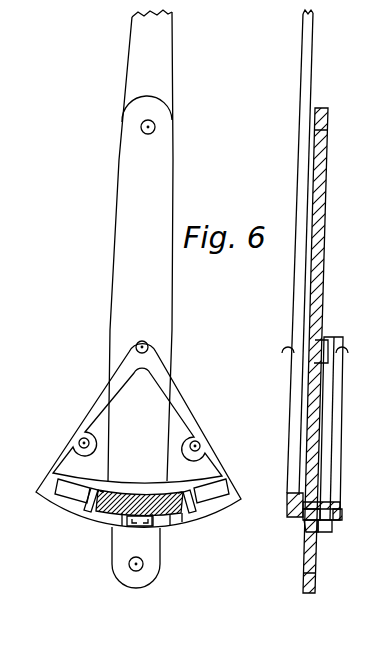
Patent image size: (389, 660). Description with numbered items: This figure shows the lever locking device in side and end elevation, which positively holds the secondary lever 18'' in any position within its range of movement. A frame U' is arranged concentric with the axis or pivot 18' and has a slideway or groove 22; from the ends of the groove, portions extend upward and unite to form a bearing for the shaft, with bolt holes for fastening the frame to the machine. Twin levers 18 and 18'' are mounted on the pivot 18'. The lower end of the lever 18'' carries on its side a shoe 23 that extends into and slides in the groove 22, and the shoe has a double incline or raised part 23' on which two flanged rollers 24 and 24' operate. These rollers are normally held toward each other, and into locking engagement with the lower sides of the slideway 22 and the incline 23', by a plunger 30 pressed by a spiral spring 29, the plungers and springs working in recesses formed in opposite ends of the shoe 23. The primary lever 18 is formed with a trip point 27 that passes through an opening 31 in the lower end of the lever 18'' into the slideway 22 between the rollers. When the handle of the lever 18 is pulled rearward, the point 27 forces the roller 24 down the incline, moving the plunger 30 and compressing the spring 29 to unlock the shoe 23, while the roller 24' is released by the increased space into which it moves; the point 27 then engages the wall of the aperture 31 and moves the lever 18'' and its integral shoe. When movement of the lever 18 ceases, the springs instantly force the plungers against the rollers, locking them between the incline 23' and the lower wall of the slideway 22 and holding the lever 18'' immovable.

The lever 18 is at (228, 252).
The pivot 18' is at (260, 332).
The lever 18'' is at (198, 350).
The frame U' is at (214, 428).
The slideway 22 is at (142, 491).
The shoe 23 is at (195, 527).
The raised part 23' is at (140, 488).
The flanged roller 24 is at (134, 535).
The flanged roller 24' is at (257, 529).
The trip point 27 is at (99, 502).
The spiral spring 29 is at (184, 507).
The plunger 30 is at (112, 502).
The opening 31 is at (306, 521).